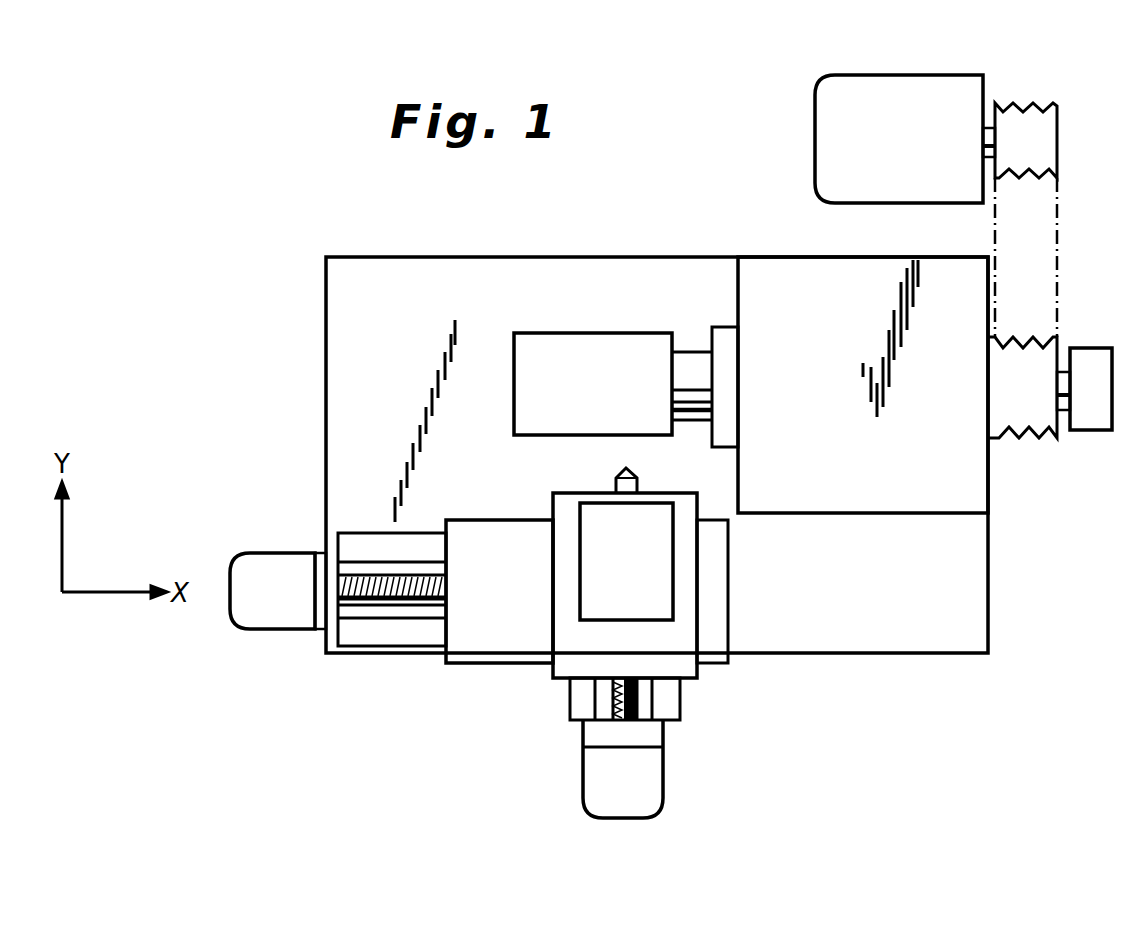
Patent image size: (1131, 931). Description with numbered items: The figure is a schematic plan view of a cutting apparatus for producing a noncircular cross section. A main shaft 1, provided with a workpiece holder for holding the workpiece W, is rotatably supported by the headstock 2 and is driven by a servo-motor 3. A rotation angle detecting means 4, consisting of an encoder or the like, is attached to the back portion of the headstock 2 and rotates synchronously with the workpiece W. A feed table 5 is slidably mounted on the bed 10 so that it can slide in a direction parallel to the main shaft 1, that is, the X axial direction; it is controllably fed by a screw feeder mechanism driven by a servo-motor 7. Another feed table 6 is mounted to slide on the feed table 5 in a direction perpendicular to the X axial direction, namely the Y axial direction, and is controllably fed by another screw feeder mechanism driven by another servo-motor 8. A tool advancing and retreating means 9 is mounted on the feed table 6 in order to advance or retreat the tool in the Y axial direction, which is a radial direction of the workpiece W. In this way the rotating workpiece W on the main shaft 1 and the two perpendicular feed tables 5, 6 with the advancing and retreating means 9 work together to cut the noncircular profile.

The main shaft 1 is at (693, 368).
The headstock 2 is at (793, 287).
The servo-motor 3 is at (832, 115).
The rotation angle detecting means 4 is at (1092, 420).
The feed table 5 is at (487, 645).
The feed table 6 is at (677, 660).
The servo-motor 7 is at (270, 608).
The servo-motor 8 is at (595, 785).
The tool advancing and retreating means 9 is at (657, 577).
The bed 10 is at (357, 347).
The workpiece W is at (560, 358).